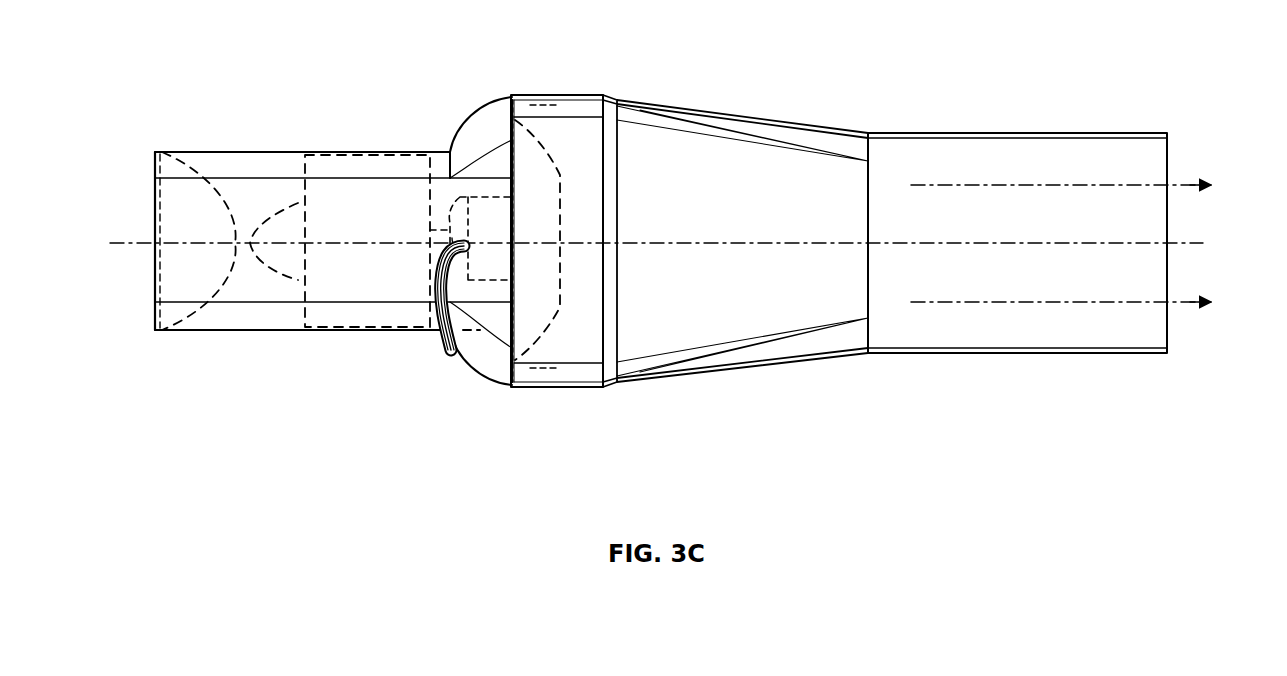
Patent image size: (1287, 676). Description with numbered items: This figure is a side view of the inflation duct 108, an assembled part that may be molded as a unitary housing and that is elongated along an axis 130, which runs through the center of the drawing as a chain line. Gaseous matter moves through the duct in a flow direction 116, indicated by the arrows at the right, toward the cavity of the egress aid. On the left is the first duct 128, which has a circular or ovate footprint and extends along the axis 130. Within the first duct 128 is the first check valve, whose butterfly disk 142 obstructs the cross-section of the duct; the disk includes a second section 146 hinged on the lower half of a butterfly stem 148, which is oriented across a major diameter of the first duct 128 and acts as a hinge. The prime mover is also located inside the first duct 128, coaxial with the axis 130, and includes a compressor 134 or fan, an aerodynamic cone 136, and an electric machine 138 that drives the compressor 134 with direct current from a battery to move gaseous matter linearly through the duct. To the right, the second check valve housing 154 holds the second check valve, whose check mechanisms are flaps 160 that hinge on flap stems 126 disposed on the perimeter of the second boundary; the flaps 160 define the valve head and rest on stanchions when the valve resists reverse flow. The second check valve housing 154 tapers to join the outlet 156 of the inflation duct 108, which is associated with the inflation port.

The inflation duct 108 is at (698, 92).
The flow direction 116 is at (1130, 185).
The flap stems 126 is at (515, 217).
The first duct 128 is at (160, 117).
The axis 130 is at (1177, 245).
The compressor 134 is at (405, 176).
The aerodynamic cone 136 is at (290, 224).
The electric machine 138 is at (493, 196).
The butterfly disk 142 is at (210, 305).
The second section 146 is at (173, 290).
The butterfly stem 148 is at (156, 212).
The second check valve housing 154 is at (588, 92).
The outlet 156 is at (1050, 130).
The flaps 160 is at (545, 110).